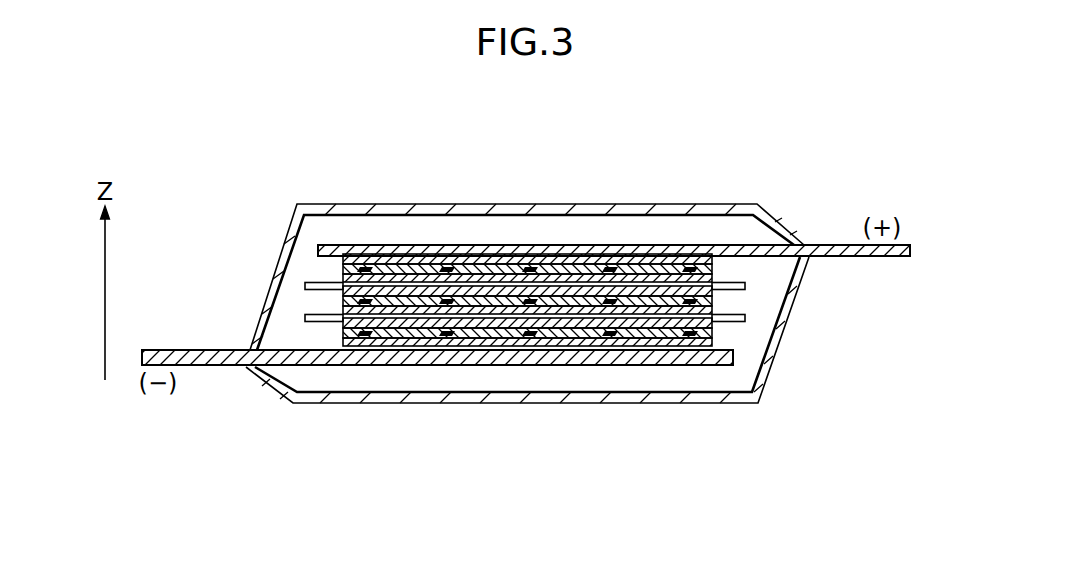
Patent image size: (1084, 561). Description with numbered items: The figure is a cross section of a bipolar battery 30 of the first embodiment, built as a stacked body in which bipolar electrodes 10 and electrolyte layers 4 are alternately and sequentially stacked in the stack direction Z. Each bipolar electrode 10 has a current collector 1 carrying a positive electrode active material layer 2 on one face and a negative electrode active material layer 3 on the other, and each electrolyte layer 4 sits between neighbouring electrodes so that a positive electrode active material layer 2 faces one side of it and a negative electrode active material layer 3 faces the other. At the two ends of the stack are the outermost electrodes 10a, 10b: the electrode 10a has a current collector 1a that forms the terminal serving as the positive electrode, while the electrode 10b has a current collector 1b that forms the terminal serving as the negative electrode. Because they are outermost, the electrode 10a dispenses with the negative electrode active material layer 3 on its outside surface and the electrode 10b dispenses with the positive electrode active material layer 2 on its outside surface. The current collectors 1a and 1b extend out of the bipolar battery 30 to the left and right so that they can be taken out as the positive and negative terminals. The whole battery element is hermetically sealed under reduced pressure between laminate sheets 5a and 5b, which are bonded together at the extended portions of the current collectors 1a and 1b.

The bipolar battery 30 is at (343, 150).
The bipolar electrode 10 is at (847, 278).
The electrode having the current collector serving as the positive electrode 10a is at (412, 150).
The electrode having the current collector serving as the negative electrode 10b is at (422, 462).
The current collector 1 is at (745, 320).
The current collector 1a is at (478, 245).
The current collector 1b is at (452, 366).
The positive electrode active material layer 2 is at (432, 260).
The electrolyte layer 4 is at (711, 343).
The negative electrode active material layer 3 is at (711, 308).
The laminate sheet 5a is at (681, 204).
The laminate sheet 5b is at (363, 408).